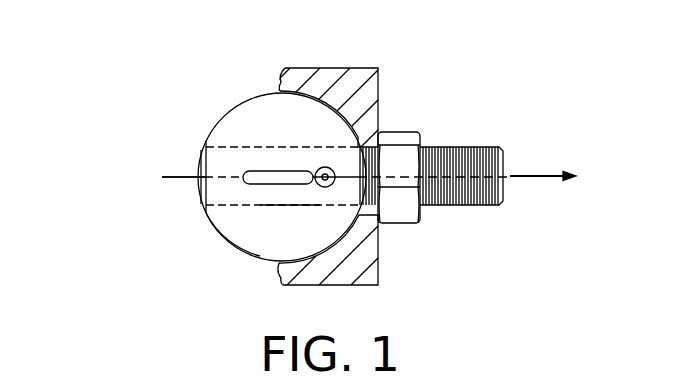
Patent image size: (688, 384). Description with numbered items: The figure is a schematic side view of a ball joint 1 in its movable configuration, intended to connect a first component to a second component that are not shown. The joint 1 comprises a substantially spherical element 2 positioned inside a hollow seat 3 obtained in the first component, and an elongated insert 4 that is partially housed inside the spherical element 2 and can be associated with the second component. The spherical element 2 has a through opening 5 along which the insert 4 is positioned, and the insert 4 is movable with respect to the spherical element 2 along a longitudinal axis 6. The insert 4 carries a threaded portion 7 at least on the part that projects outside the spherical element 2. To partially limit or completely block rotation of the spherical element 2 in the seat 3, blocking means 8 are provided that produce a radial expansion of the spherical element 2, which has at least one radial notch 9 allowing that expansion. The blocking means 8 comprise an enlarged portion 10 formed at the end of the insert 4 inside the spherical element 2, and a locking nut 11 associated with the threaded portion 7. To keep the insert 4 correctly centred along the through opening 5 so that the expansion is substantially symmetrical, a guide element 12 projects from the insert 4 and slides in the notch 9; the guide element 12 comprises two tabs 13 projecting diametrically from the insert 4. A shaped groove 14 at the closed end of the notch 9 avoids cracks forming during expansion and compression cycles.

The ball joint 1 is at (104, 70).
The spherical element 2 is at (250, 108).
The hollow seat 3 is at (358, 72).
The insert 4 is at (234, 140).
The through opening 5 is at (253, 229).
The longitudinal axis 6 is at (568, 168).
The threaded portion 7 is at (477, 160).
The blocking means 8 is at (440, 66).
The notch 9 is at (220, 206).
The enlarged portion 10 is at (197, 180).
The locking nut 11 is at (407, 133).
The guide element 12 is at (290, 210).
The tabs 13 is at (273, 176).
The shaped groove 14 is at (330, 195).